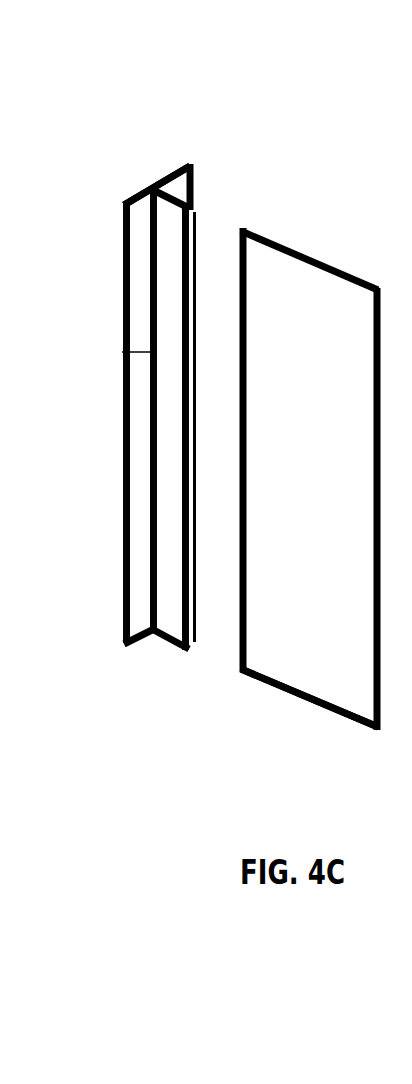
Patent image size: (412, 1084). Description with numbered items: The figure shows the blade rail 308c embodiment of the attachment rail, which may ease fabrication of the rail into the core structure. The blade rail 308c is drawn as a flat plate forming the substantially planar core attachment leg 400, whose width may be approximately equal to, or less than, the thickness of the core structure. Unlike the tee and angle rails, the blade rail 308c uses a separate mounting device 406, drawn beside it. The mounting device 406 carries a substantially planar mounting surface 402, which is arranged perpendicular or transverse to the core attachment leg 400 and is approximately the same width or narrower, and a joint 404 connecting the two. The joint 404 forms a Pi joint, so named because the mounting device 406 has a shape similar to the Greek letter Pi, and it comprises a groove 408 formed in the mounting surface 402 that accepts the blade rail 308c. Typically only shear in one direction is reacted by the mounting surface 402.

The mounting surface 402 is at (124, 437).
The joint 404 is at (121, 356).
The mounting device 406 is at (150, 158).
The groove 408 is at (197, 638).
The blade rail 308c is at (290, 200).
The core attachment leg 400 is at (282, 613).